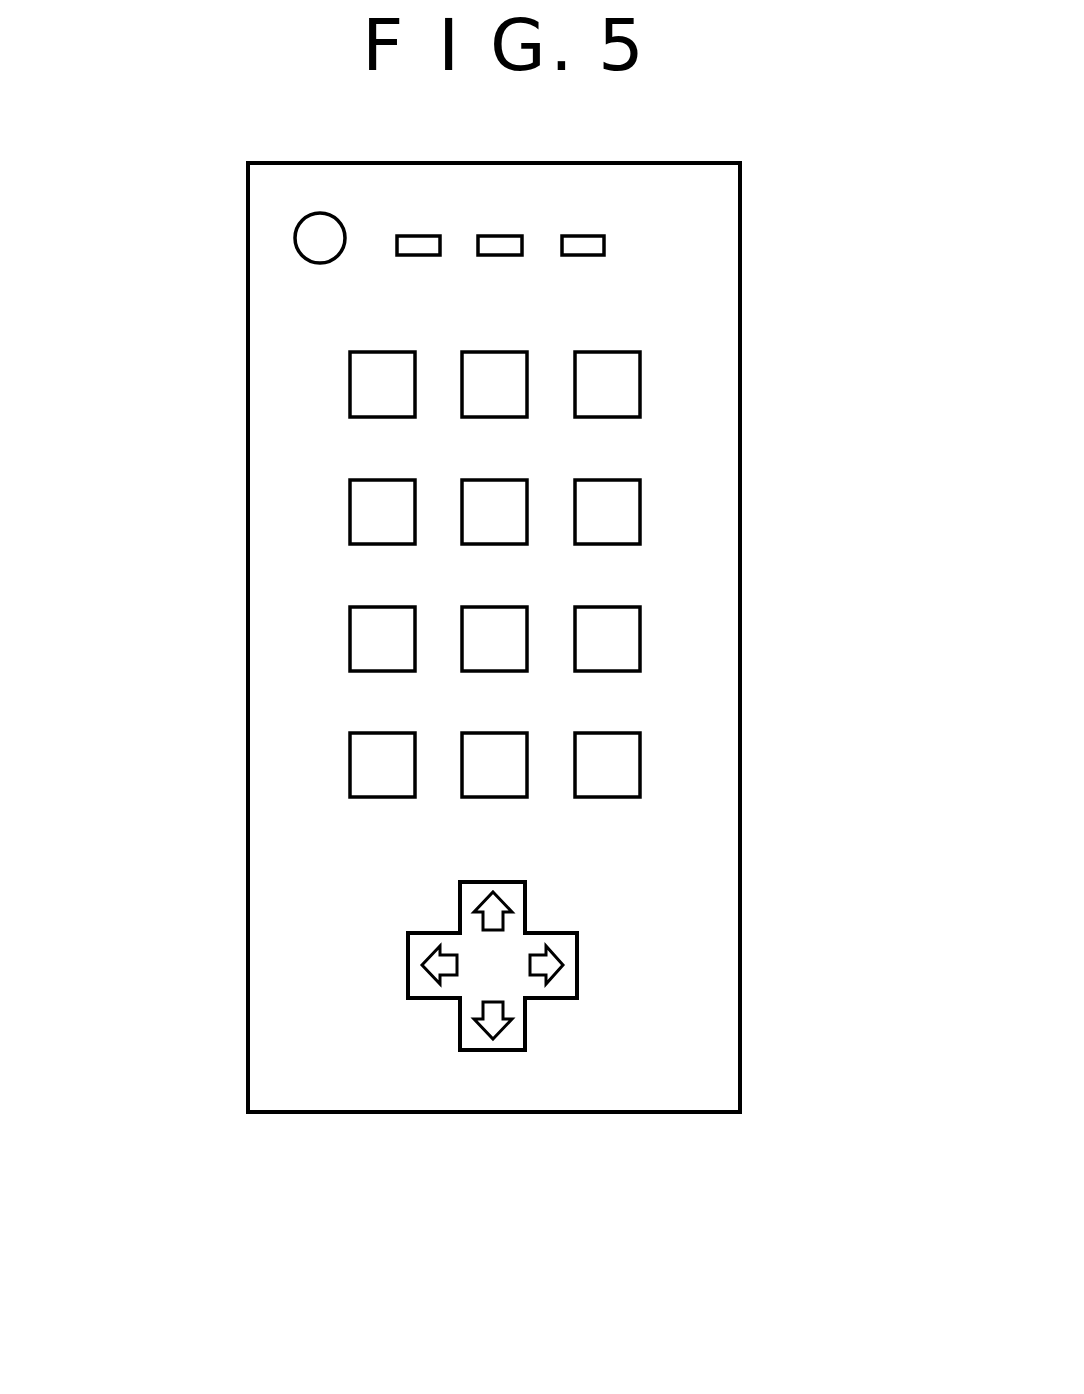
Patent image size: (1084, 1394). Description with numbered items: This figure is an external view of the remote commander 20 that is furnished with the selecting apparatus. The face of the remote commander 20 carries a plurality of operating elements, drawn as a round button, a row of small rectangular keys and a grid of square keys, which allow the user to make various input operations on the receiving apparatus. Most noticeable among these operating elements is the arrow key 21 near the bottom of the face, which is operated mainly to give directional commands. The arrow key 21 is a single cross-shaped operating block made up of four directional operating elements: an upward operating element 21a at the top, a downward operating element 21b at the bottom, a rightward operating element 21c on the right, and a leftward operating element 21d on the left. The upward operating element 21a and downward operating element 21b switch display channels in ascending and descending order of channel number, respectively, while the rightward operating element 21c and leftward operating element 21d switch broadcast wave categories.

The remote commander 20 is at (720, 1293).
The arrow key 21 is at (633, 863).
The upward operating element 21a is at (460, 905).
The downward operating element 21b is at (492, 1050).
The rightward operating element 21c is at (548, 933).
The leftward operating element 21d is at (408, 965).